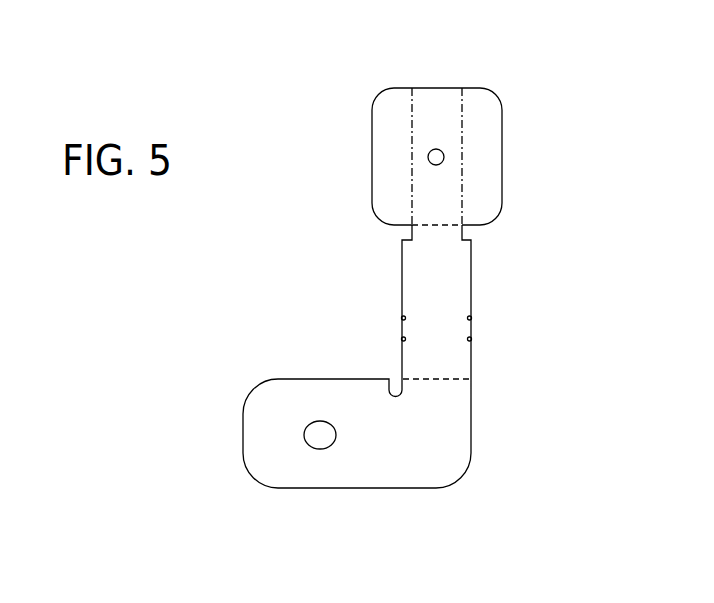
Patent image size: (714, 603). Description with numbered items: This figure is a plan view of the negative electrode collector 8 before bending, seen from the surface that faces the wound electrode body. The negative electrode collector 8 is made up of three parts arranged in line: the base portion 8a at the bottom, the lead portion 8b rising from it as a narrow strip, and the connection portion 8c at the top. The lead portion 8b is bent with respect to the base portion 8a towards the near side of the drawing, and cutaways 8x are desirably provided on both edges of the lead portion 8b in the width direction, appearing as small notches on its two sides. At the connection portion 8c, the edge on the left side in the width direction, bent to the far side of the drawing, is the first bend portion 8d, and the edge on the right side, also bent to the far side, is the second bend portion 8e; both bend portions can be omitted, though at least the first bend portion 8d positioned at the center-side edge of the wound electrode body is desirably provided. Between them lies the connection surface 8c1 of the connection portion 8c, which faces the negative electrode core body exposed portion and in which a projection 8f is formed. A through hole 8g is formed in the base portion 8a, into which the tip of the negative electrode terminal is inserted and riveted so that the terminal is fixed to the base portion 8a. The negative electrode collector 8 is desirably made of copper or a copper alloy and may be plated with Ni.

The negative electrode collector 8 is at (279, 102).
The base portion 8a is at (333, 467).
The lead portion 8b is at (462, 300).
The connection portion 8c is at (437, 207).
The connection surface 8c1 is at (437, 103).
The first bend portion 8d is at (387, 132).
The second bend portion 8e is at (483, 108).
The projection 8f is at (444, 156).
The through hole 8g is at (320, 428).
The cutaways 8x is at (402, 318).